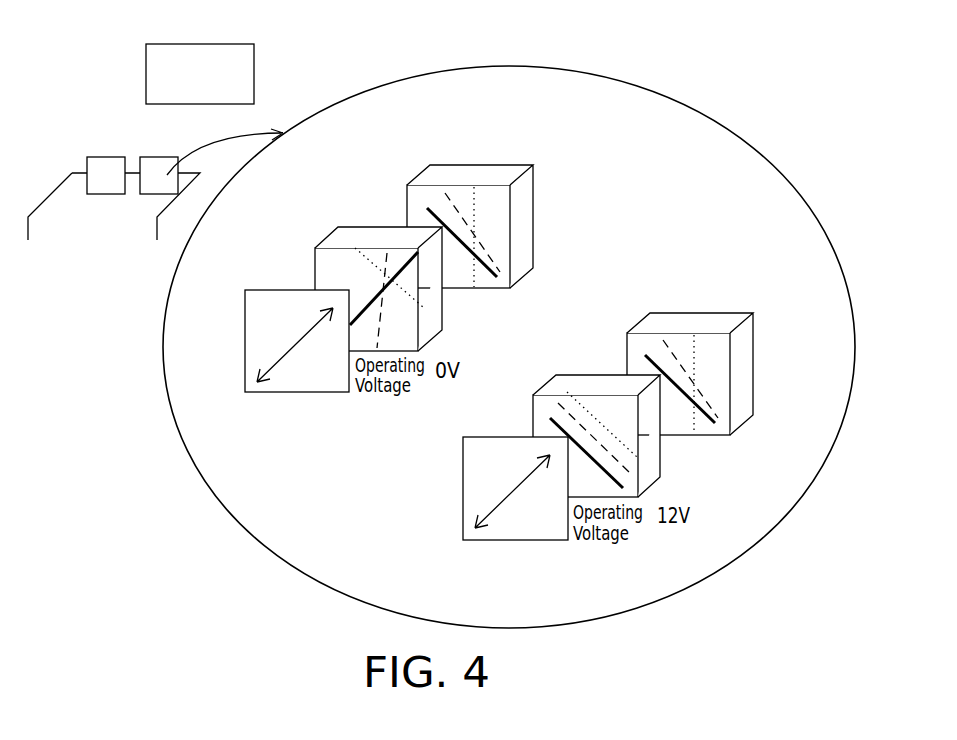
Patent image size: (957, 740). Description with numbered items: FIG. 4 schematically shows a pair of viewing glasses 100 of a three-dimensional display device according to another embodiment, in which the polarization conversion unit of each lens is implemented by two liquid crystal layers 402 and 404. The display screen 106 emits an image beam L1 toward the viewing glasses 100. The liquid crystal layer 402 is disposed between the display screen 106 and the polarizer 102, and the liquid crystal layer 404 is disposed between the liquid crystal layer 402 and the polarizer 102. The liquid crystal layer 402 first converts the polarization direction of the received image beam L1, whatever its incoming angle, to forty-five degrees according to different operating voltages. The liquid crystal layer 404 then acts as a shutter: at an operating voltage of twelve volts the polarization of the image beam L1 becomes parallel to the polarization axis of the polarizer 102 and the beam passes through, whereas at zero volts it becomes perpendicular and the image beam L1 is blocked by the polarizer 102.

The pair of viewing glasses 100 is at (100, 157).
The display screen 106 is at (227, 44).
The polarizer 102 is at (273, 290).
The liquid crystal layer 402 is at (533, 228).
The liquid crystal layer 404 is at (385, 227).
The image beam L1 is at (203, 80).